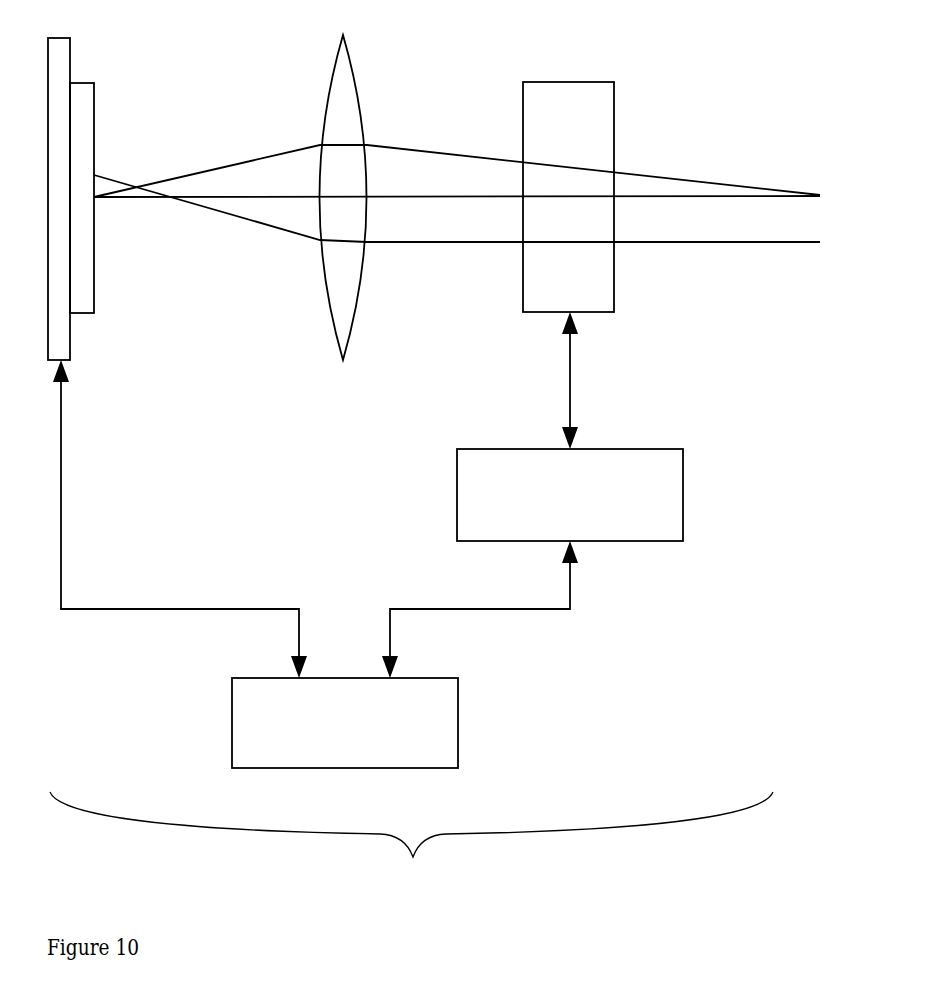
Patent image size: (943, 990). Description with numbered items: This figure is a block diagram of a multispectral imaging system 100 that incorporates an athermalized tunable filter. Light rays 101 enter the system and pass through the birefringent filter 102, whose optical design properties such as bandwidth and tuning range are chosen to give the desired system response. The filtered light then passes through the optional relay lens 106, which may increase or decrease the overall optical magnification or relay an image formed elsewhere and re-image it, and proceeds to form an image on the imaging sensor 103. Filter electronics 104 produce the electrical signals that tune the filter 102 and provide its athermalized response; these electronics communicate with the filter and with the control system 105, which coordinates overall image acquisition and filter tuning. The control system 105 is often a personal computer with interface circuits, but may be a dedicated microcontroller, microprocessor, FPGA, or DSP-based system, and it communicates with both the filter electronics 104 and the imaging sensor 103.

The optical system 100 is at (411, 846).
The light rays 101 is at (772, 196).
The birefringent filter 102 is at (571, 82).
The imaging sensor 103 is at (95, 98).
The filter electronics 104 is at (622, 449).
The control system 105 is at (407, 678).
The relay lens 106 is at (357, 63).